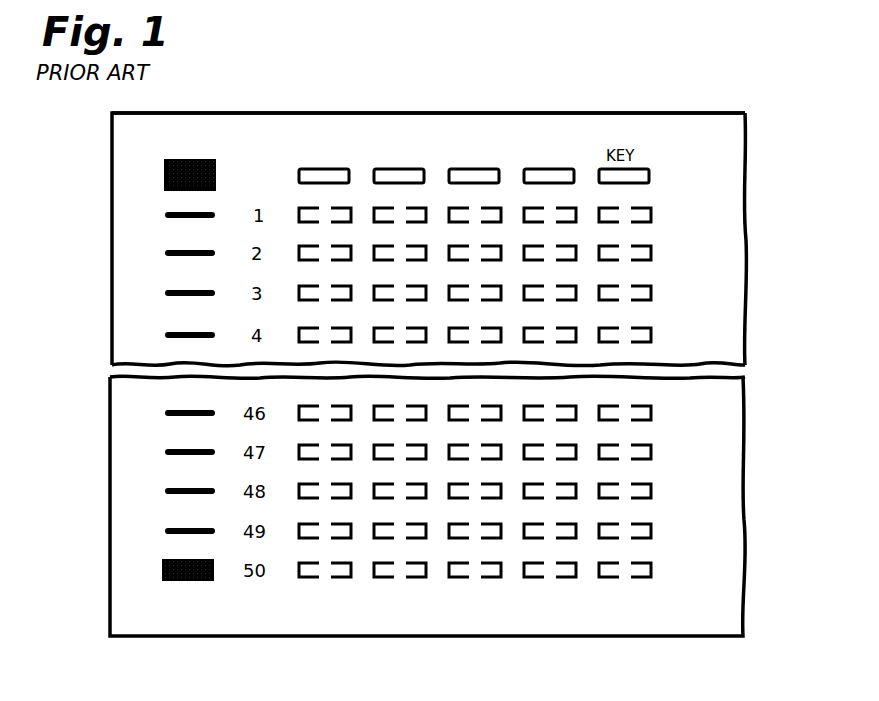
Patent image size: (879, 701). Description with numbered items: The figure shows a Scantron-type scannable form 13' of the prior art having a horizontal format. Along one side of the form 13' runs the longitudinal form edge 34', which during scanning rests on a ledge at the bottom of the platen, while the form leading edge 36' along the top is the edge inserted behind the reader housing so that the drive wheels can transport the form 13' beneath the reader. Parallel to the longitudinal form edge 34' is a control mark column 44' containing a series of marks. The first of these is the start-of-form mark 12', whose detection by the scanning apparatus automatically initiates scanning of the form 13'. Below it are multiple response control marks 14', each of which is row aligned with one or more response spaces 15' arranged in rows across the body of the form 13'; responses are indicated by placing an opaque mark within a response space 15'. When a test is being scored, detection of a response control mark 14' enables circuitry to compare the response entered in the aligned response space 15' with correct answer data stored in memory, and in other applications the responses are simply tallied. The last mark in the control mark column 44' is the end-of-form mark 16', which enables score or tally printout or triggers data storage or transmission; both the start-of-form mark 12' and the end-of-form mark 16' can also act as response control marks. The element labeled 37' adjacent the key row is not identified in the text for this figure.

The start-of-form mark 12' is at (130, 177).
The form 13' is at (405, 336).
The response control marks 14' is at (130, 398).
The response spaces 15' is at (362, 620).
The end-of-form mark 16' is at (129, 558).
The longitudinal form edge 34' is at (390, 239).
The form leading edge 36' is at (428, 95).
The key response box 37' is at (697, 170).
The control mark column 44' is at (228, 134).